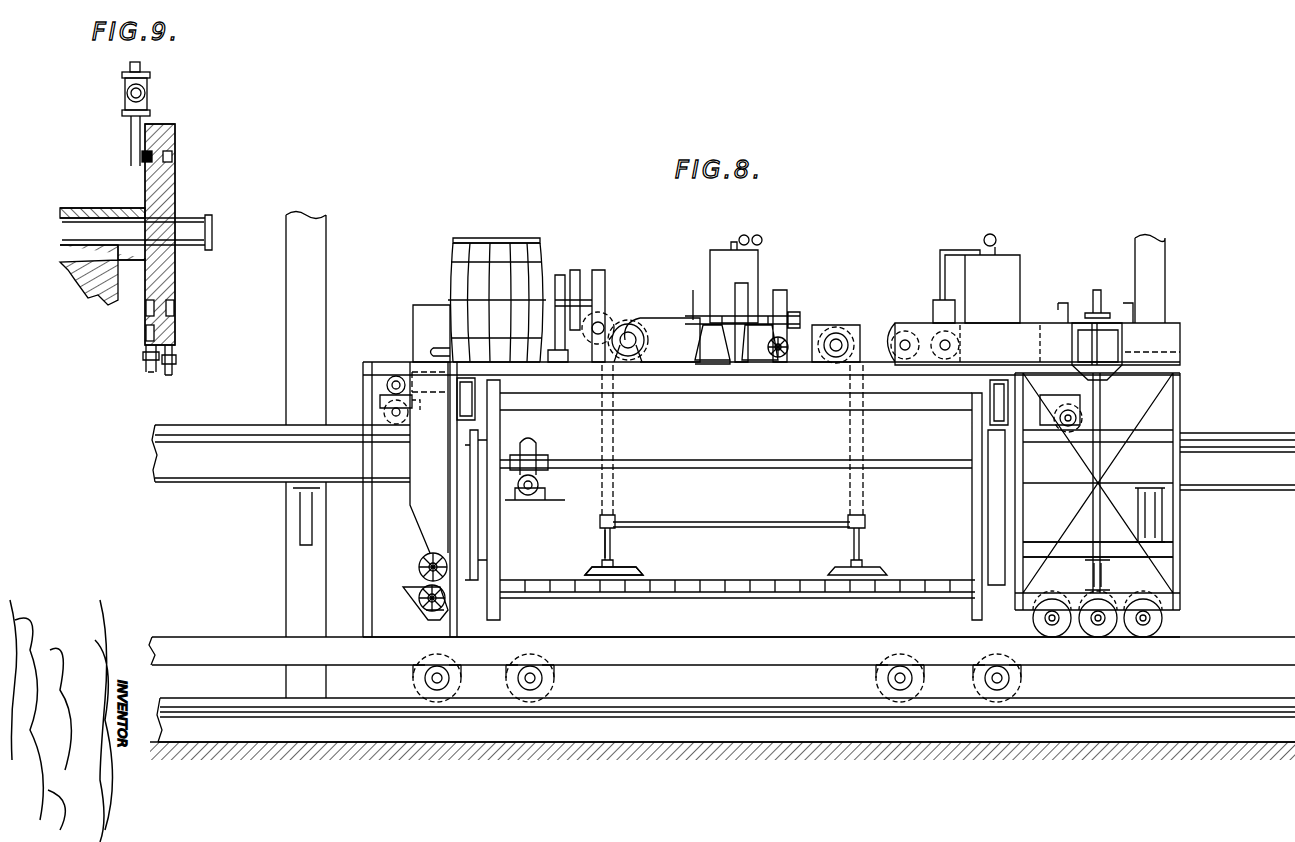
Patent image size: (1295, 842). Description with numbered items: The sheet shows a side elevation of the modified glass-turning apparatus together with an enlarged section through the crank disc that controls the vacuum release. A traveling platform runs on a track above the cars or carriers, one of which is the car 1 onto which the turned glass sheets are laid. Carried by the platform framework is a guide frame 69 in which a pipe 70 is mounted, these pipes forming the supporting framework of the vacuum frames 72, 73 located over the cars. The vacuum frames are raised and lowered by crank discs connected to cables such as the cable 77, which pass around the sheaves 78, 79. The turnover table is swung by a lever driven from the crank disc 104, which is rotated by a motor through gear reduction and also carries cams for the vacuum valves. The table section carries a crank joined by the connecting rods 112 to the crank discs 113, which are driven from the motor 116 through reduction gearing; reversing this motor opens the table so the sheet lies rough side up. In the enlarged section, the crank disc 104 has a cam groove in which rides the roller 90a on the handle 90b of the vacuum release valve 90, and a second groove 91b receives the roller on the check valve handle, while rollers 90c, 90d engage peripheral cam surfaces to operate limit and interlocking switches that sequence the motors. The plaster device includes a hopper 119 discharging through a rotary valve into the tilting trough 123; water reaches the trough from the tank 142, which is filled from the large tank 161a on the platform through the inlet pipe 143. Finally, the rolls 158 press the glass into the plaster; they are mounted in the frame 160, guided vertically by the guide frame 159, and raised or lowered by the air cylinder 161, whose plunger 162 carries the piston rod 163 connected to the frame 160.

In FIG. 8, the car 1 is at (243, 637).
In FIG. 8, the guide frame 69 is at (614, 437).
In FIG. 8, the pipe 70 is at (610, 537).
In FIG. 8, the vacuum frame 72 is at (635, 570).
In FIG. 8, the vacuum frame 73 is at (672, 528).
In FIG. 8, the cable 77 is at (672, 318).
In FIG. 8, the sheave 78 is at (648, 340).
In FIG. 8, the sheave 79 is at (693, 290).
In FIG. 9, the vacuum release valve 90 is at (150, 94).
In FIG. 9, the roller 90a is at (142, 160).
In FIG. 9, the handle 90b is at (136, 134).
In FIG. 9, the roller 90c is at (150, 372).
In FIG. 9, the roller 90d is at (169, 375).
In FIG. 9, the groove 91b is at (172, 157).
In FIG. 9, the crank disc 104 is at (176, 290).
In FIG. 8, the connecting rod 112 is at (473, 538).
In FIG. 8, the crank disc 113 is at (475, 452).
In FIG. 8, the motor 116 is at (528, 495).
In FIG. 8, the hopper 119 is at (410, 505).
In FIG. 8, the trough 123 is at (410, 600).
In FIG. 8, the tank 142 is at (418, 297).
In FIG. 8, the inlet pipe 143 is at (432, 352).
In FIG. 8, the rolls 158 is at (1055, 637).
In FIG. 8, the guide frame 159 is at (1180, 508).
In FIG. 8, the frame 160 is at (1160, 550).
In FIG. 8, the air cylinder 161 is at (1125, 337).
In FIG. 8, the large tank 161a is at (520, 220).
In FIG. 8, the plunger 162 is at (1180, 352).
In FIG. 8, the piston rod 163 is at (1100, 415).